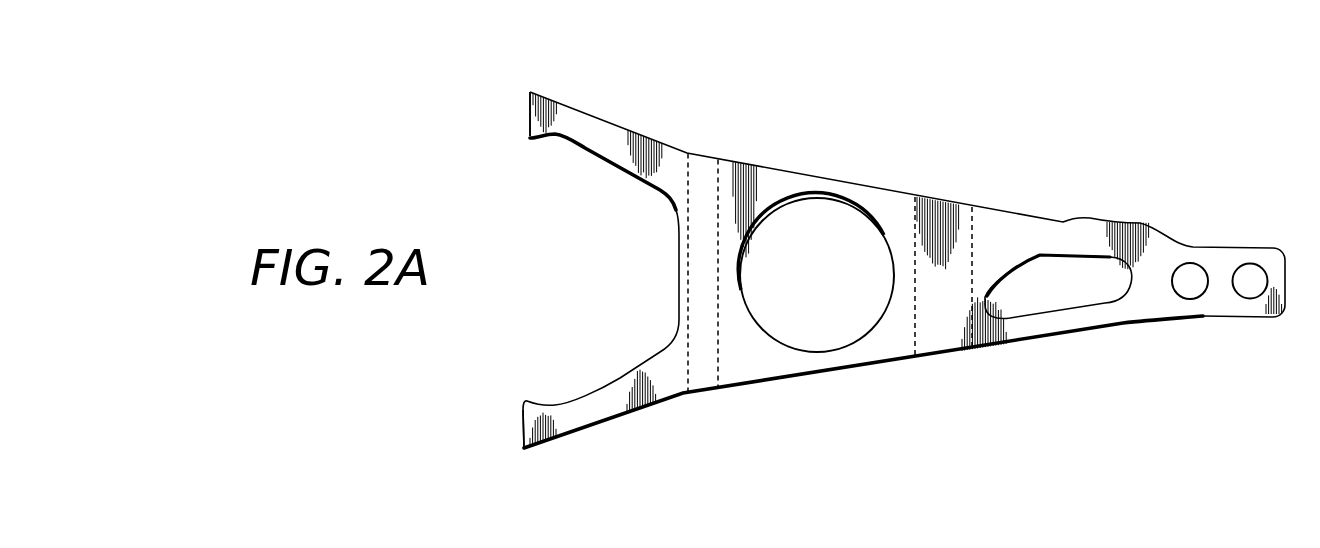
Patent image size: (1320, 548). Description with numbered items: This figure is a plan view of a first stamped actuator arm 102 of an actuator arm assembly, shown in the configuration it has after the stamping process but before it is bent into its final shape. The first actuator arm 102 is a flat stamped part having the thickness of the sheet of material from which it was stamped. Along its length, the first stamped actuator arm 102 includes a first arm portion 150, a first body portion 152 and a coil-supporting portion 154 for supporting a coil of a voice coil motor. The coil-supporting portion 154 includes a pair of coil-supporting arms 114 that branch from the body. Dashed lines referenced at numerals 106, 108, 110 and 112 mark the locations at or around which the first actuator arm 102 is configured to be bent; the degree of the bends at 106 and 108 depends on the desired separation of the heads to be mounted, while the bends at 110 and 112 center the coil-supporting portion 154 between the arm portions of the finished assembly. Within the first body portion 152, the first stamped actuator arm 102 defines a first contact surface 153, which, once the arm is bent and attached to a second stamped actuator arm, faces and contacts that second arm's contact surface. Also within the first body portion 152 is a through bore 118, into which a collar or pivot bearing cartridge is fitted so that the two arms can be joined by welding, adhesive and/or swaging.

The first stamped actuator arm 102 is at (1228, 233).
The dashed bend line 106 is at (972, 243).
The dashed bend line 108 is at (915, 237).
The dashed bend line 110 is at (718, 292).
The dashed bend line 112 is at (688, 230).
The coil-supporting arms 114 is at (545, 143).
The through bore 118 is at (832, 313).
The first arm portion 150 is at (1298, 85).
The first body portion 152 is at (723, 82).
The first contact surface 153 is at (880, 345).
The coil-supporting portion 154 is at (535, 82).